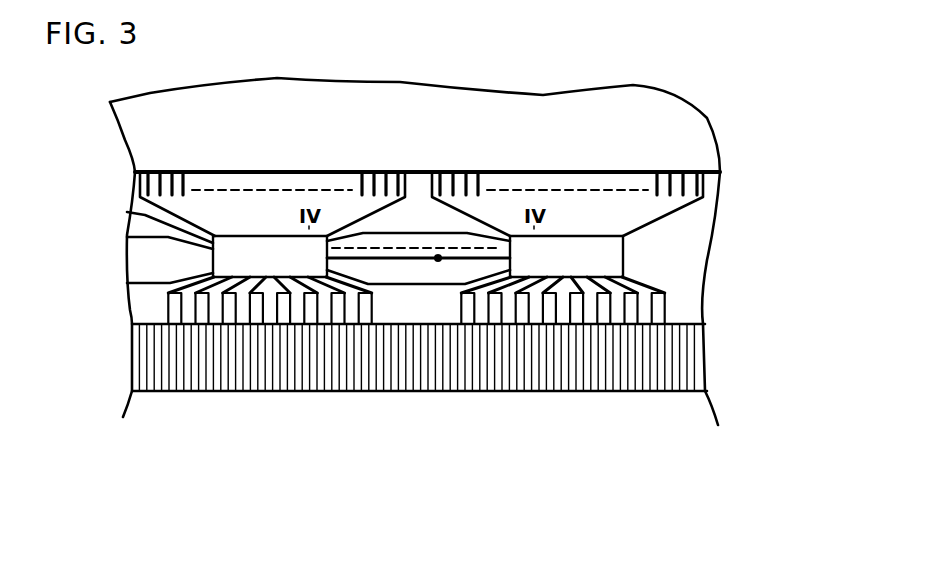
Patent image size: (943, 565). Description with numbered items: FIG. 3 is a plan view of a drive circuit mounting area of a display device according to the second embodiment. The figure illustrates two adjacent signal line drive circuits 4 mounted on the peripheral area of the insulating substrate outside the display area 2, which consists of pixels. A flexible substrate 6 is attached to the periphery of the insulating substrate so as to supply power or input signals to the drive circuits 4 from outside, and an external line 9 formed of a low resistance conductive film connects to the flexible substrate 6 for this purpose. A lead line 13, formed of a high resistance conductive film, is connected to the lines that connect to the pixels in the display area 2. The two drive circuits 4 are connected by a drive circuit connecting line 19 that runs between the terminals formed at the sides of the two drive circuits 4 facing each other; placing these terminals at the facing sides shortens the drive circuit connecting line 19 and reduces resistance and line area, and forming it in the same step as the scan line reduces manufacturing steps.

The display area 2 is at (692, 138).
The signal line drive circuit 4 is at (278, 236).
The flexible substrate 6 is at (475, 370).
The external line 9 is at (645, 282).
The lead line 13 is at (127, 212).
The drive circuit connecting line 19 is at (438, 258).